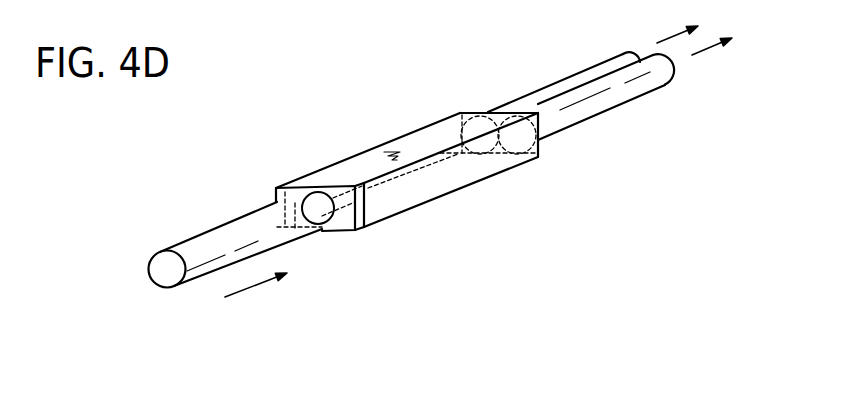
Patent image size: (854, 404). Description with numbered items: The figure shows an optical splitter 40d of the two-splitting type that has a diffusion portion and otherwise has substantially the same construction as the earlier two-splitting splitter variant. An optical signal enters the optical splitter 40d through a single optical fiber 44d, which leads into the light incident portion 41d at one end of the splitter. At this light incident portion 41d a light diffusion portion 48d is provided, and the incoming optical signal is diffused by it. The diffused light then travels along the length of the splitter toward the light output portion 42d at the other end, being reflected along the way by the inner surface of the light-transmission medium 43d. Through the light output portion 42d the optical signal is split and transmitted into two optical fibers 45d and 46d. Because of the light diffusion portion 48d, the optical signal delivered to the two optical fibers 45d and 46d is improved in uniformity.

The optical splitter 40d is at (328, 107).
The light incident portion 41d is at (363, 229).
The light output portion 42d is at (540, 158).
The light-transmission medium 43d is at (434, 198).
The optical fiber 44d is at (218, 227).
The optical fiber 45d is at (537, 90).
The optical fiber 46d is at (622, 108).
The light diffusion portion 48d is at (346, 224).